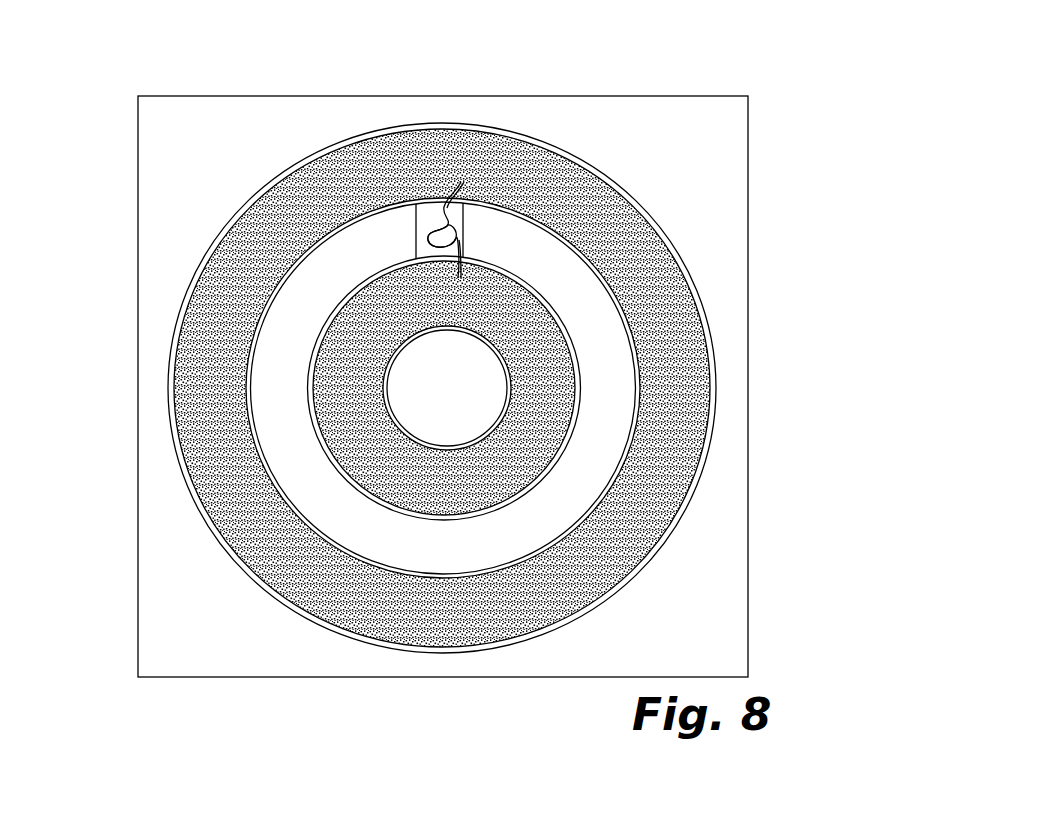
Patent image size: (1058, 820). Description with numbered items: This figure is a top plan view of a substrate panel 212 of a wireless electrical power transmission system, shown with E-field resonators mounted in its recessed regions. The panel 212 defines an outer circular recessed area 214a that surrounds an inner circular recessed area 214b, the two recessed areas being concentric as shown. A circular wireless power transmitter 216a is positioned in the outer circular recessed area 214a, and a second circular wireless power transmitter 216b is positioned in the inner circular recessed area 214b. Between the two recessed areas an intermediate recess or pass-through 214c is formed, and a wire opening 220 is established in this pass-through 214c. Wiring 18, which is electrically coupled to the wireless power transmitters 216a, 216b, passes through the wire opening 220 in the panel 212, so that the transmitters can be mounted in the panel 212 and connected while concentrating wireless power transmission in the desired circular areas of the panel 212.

The panel 212 is at (713, 95).
The outer circular recessed area 214a is at (176, 352).
The circular wireless power transmitter 216a is at (216, 279).
The inner circular recessed area 214b is at (322, 449).
The circular wireless power transmitter 216b is at (364, 463).
The intermediate recess or pass-through 214c is at (413, 257).
The wire opening 220 is at (426, 229).
The wiring 18 is at (466, 256).